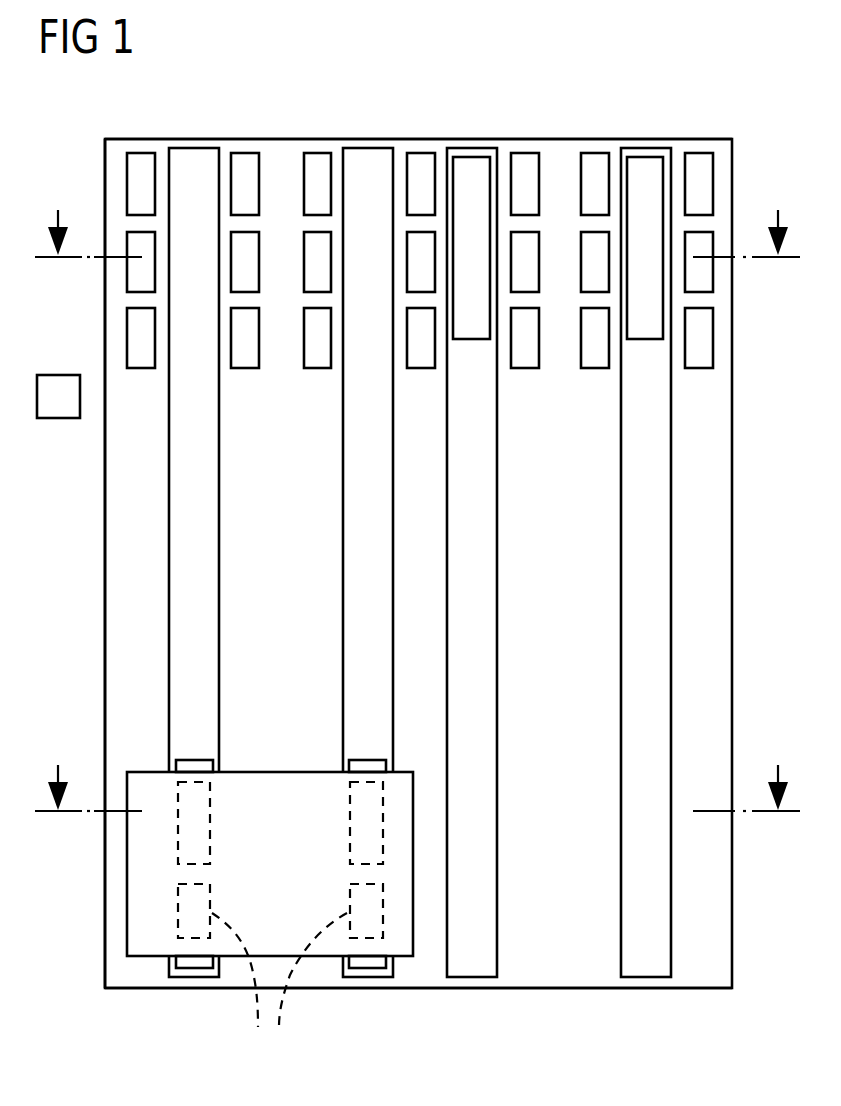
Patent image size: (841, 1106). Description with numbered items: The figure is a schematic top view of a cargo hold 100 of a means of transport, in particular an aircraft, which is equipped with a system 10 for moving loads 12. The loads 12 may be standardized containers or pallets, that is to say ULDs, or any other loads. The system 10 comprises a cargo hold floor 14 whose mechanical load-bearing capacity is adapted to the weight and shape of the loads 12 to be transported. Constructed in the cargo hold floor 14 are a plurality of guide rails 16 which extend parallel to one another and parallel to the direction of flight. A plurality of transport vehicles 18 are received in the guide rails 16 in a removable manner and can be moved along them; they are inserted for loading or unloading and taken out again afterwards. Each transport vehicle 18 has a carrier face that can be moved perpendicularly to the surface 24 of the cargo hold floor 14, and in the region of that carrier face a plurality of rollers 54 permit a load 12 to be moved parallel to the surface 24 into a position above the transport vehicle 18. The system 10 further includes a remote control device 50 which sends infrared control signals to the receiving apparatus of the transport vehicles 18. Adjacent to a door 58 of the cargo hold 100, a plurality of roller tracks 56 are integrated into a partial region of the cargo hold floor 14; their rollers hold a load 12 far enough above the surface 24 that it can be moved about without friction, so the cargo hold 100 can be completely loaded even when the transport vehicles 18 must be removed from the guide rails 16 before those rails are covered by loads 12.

The cargo hold 100 is at (718, 92).
The system for moving loads 10 is at (572, 952).
The load 12 is at (140, 912).
The cargo hold floor 14 is at (421, 980).
The guide rail 16 is at (358, 610).
The transport vehicle 18 is at (472, 172).
The surface of the cargo hold floor 24 is at (284, 148).
The remote control device 50 is at (57, 412).
The rollers 54 is at (279, 988).
The roller tracks 56 is at (140, 345).
The door 58 is at (105, 296).